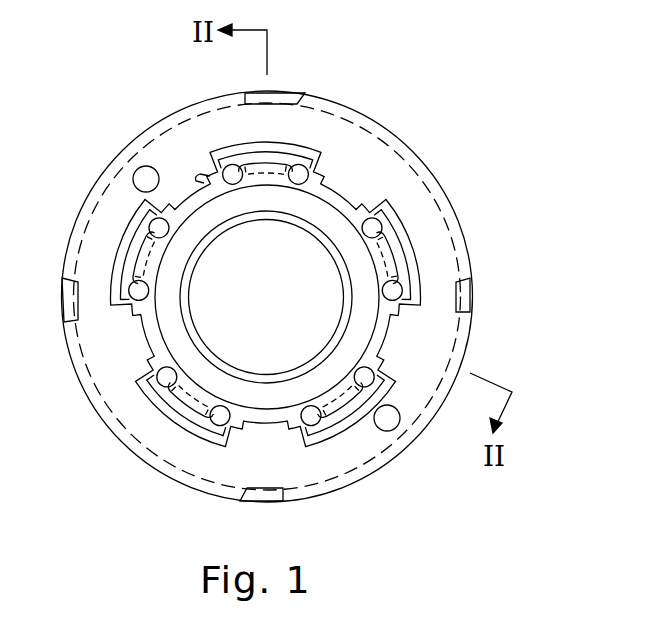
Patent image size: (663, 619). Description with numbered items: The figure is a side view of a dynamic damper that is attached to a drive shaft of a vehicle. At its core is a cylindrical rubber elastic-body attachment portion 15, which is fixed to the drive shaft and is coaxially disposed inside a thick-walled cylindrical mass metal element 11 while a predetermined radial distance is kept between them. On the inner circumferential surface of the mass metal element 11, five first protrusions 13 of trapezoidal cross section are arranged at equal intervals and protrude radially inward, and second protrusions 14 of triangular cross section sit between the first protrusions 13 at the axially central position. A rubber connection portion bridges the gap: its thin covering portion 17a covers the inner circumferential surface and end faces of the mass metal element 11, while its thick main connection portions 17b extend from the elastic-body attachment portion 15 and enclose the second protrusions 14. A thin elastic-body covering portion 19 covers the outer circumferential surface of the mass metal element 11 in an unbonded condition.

The mass metal element 11 is at (362, 106).
The first protrusions 13 is at (197, 178).
The second protrusions 14 is at (295, 165).
The elastic-body attachment portion 15 is at (313, 208).
The thin covering portion 17a is at (433, 311).
The main connection portions 17b is at (373, 363).
The elastic-body covering portion 19 is at (463, 210).